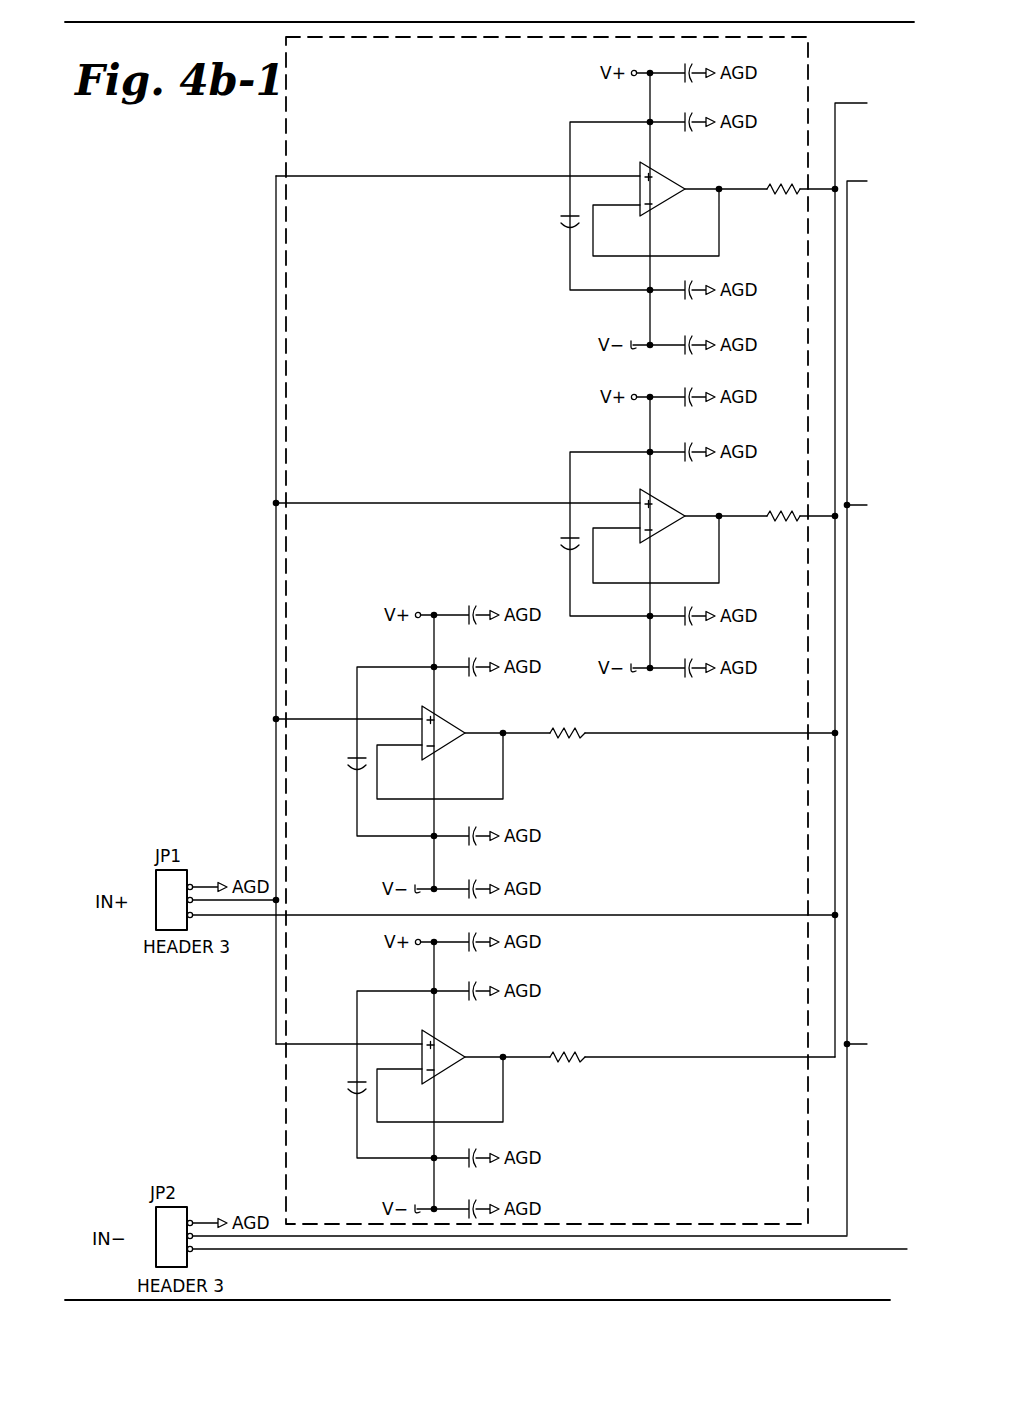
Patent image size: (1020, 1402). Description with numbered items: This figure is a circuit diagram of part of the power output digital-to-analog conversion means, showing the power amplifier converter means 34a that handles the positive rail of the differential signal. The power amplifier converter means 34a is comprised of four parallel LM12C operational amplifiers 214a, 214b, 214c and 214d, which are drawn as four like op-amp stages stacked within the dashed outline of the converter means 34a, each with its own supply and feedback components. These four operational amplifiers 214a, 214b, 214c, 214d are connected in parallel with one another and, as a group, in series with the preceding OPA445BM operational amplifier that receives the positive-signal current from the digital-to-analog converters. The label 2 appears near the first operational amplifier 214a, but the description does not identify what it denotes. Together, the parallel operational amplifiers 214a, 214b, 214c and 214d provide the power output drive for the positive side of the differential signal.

The power amplifier converter means 34a is at (608, 37).
The LM12C operational amplifier 214a is at (555, 198).
The LM12C operational amplifier 214b is at (640, 495).
The LM12C operational amplifier 214c is at (455, 736).
The LM12C operational amplifier 214d is at (455, 1060).
The op-amp U1 2 is at (662, 176).